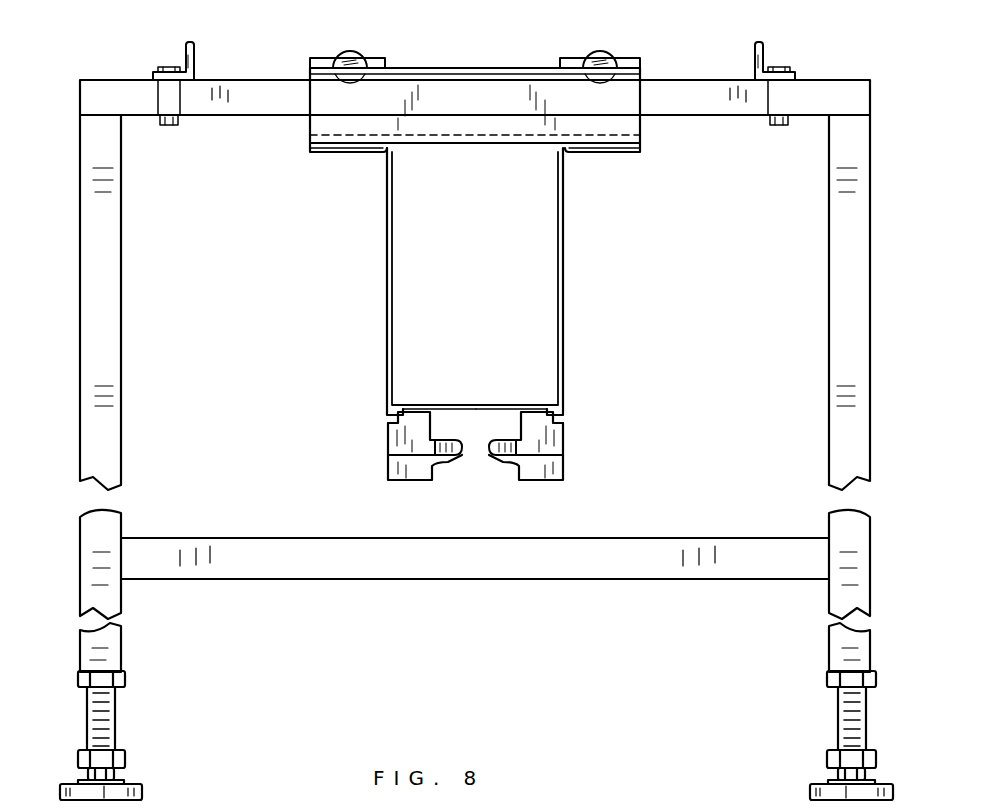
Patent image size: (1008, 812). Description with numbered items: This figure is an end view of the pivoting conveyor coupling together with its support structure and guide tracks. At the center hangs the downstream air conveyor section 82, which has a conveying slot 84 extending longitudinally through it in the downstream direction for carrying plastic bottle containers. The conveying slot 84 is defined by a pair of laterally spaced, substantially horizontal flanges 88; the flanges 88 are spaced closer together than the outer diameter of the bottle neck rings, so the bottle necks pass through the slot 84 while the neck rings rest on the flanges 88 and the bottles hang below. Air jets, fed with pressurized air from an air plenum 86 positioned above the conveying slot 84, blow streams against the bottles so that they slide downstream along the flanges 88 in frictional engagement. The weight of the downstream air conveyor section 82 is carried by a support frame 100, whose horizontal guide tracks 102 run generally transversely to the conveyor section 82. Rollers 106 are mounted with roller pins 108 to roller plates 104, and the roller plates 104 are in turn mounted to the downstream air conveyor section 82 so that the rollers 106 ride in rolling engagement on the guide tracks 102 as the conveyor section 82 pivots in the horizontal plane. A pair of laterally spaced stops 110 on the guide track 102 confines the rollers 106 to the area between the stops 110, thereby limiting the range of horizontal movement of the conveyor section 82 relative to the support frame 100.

The downstream air conveyor section 82 is at (387, 250).
The conveying slot 84 is at (490, 458).
The air plenum 86 is at (575, 275).
The flanges 88 is at (462, 448).
The support frame 100 is at (855, 237).
The guide tracks 102 is at (238, 80).
The roller plates 104 is at (512, 68).
The rollers 106 is at (350, 50).
The roller pins 108 is at (355, 78).
The stops 110 is at (187, 55).